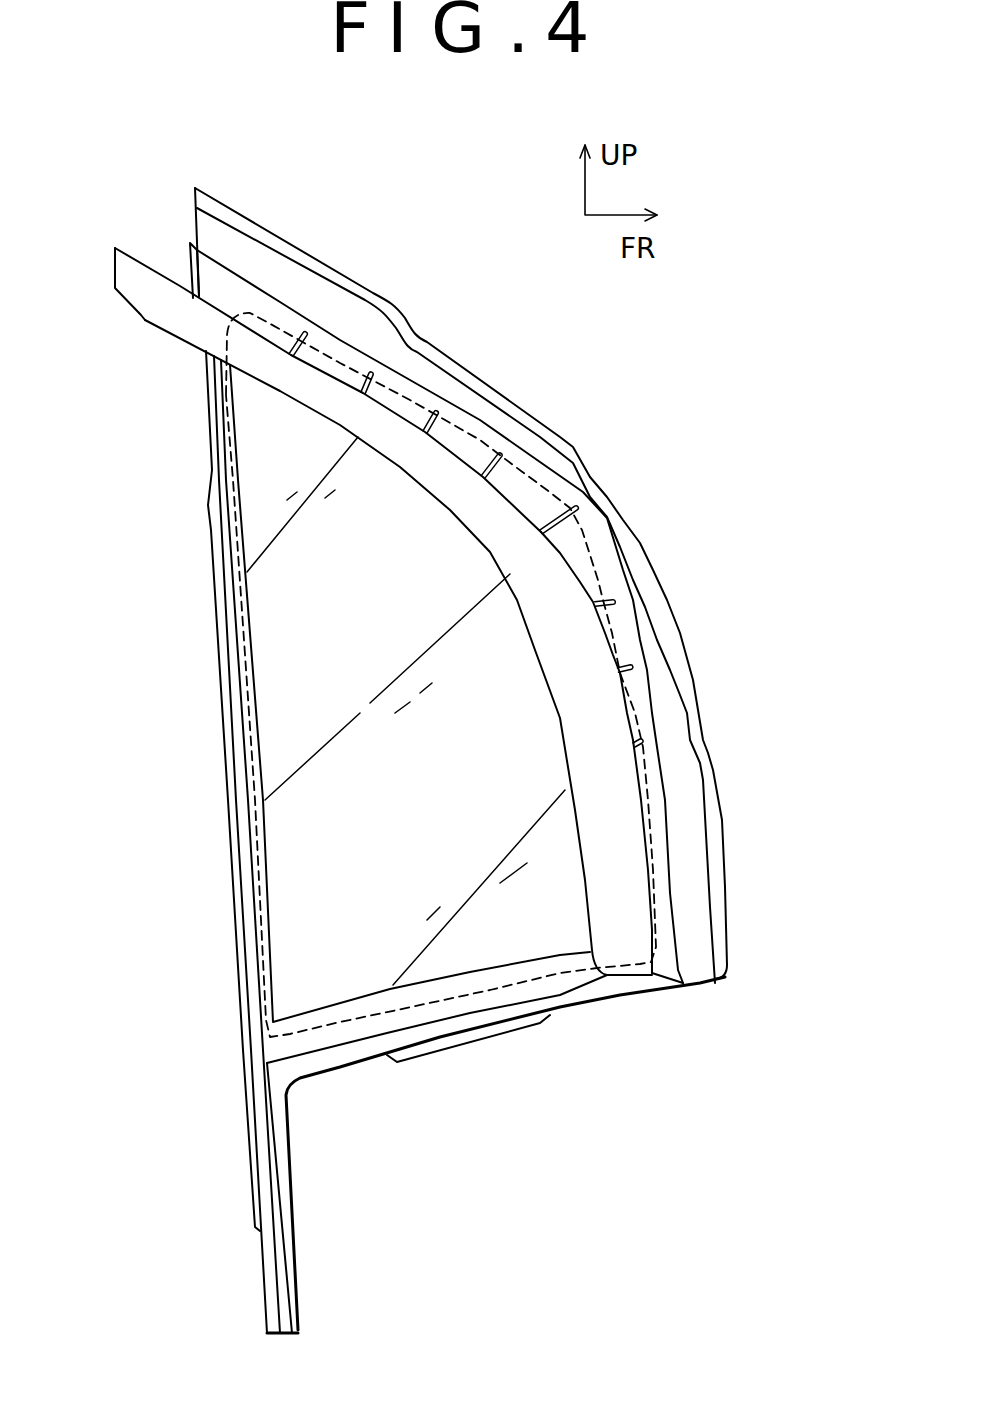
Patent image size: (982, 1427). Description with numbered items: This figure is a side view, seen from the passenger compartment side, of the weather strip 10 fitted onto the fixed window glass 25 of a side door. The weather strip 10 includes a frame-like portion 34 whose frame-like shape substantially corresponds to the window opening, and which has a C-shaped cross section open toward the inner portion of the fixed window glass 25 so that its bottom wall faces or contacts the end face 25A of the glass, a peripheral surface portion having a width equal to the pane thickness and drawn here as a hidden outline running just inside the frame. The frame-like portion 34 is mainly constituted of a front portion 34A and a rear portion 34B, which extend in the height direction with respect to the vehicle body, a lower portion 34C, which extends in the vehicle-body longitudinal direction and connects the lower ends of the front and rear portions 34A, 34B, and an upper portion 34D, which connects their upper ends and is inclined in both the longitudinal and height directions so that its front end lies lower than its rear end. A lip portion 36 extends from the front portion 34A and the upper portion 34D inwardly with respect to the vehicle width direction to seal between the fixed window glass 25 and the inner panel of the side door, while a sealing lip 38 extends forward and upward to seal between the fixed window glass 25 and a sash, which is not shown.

The weather strip 10 is at (696, 320).
The fixed window glass 25 is at (268, 646).
The end face 25A is at (410, 398).
The frame-like portion 34 is at (493, 400).
The front portion 34A is at (667, 893).
The rear portion 34B is at (243, 842).
The lower portion 34C is at (490, 1013).
The upper portion 34D is at (343, 353).
The lip portion 36 is at (583, 660).
The sealing lip 38 is at (553, 427).